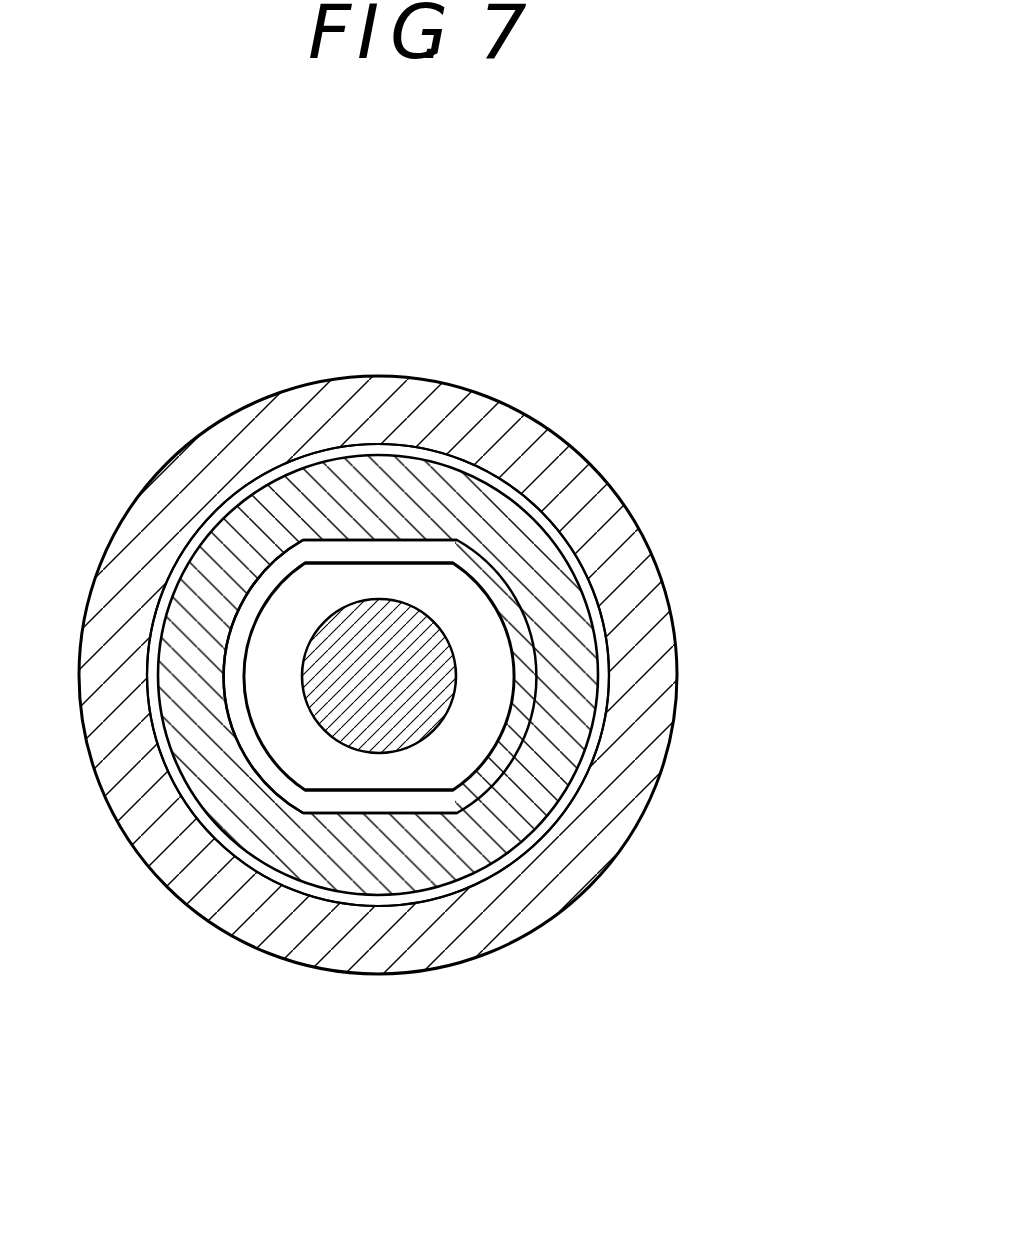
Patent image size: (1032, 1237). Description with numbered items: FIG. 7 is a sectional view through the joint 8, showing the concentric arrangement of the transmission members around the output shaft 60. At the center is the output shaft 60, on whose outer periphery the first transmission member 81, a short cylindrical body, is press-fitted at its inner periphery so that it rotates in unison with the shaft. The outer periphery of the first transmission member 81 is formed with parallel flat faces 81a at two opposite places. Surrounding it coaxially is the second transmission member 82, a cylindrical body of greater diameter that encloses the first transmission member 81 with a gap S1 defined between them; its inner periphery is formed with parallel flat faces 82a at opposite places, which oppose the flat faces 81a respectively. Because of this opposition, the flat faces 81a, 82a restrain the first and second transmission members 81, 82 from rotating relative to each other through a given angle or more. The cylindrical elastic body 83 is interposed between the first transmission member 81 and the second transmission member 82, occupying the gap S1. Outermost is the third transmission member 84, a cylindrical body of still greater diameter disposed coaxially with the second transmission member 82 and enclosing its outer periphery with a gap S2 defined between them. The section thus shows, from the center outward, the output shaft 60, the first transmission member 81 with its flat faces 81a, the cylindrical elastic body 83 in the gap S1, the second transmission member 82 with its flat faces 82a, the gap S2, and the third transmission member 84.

The joint 8 is at (644, 431).
The output shaft 60 is at (372, 640).
The first transmission member 81 is at (314, 765).
The flat faces 81a is at (443, 560).
The second transmission member 82 is at (556, 590).
The flat faces 82a is at (415, 541).
The cylindrical elastic body 83 is at (512, 747).
The third transmission member 84 is at (632, 622).
The gap S1 is at (238, 760).
The gap S2 is at (572, 800).